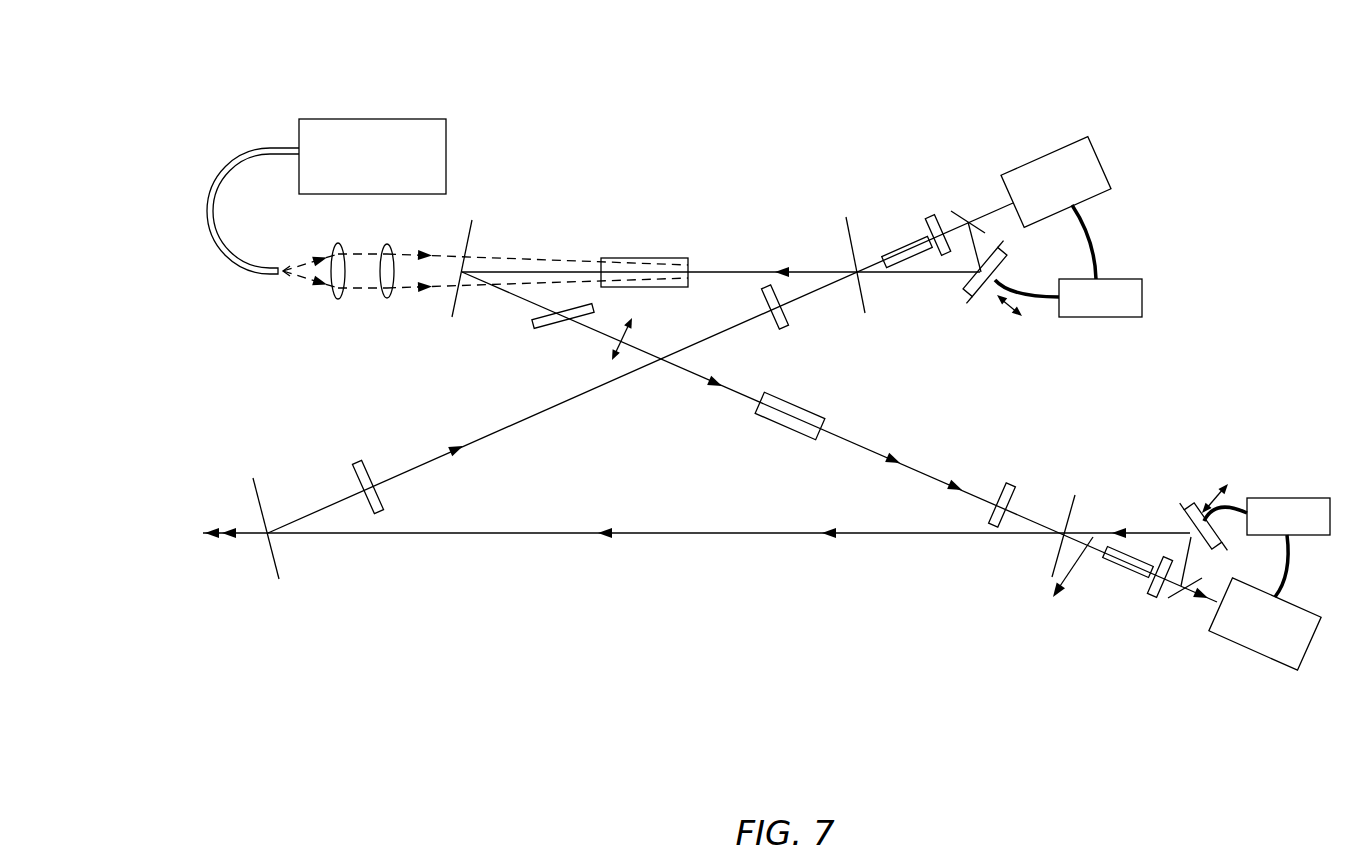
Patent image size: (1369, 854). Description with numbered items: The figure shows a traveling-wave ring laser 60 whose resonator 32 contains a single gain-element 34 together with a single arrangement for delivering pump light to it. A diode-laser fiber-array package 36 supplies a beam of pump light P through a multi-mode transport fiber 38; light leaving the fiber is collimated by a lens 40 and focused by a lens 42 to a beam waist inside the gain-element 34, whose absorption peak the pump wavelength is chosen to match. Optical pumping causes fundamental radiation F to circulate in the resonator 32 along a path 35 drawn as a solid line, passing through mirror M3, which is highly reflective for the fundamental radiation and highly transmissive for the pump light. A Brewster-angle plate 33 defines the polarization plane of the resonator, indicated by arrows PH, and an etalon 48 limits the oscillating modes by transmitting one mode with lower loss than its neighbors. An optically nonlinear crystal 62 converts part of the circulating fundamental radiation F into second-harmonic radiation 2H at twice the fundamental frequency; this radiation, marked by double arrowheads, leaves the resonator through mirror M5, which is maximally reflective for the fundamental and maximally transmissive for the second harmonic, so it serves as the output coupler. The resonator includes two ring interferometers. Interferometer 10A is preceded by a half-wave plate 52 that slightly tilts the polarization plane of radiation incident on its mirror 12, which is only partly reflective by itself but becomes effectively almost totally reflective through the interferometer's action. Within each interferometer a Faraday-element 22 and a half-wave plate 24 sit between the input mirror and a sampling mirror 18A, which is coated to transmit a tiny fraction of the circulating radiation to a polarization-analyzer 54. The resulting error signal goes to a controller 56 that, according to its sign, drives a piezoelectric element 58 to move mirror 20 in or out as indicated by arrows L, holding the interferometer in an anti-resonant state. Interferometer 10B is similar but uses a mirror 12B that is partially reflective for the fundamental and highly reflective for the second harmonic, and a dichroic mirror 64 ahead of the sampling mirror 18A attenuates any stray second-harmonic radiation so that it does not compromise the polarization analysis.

The interferometer 10A is at (894, 199).
The interferometer 10B is at (1109, 649).
The mirror 12 is at (838, 236).
The mirror 12B is at (1036, 567).
The mirror 18A is at (963, 212).
The mirror 20 is at (975, 288).
The Faraday-element 22 is at (893, 240).
The half-wave plate 24 is at (1152, 590).
The resonator 32 is at (518, 421).
The Brewster-angle plate 33 is at (533, 323).
The gain-element 34 is at (645, 258).
The path 35 is at (585, 393).
The diode-laser fiber-array package 36 is at (392, 122).
The transport fiber 38 is at (259, 151).
The lens 40 is at (333, 294).
The lens 42 is at (388, 298).
The etalon 48 is at (358, 470).
The half-wave plate 52 is at (785, 320).
The polarization-analyzer 54 is at (1120, 278).
The controller 56 is at (1118, 158).
The piezoelectric element 58 is at (985, 295).
The traveling-wave ring-laser 60 is at (947, 715).
The optically nonlinear crystal 62 is at (795, 395).
The dichroic mirror 64 is at (1093, 537).
The mirror M3 is at (471, 235).
The mirror M5 is at (277, 553).
The pump-light P is at (302, 285).
The polarization-plane arrows PH is at (632, 326).
The fundamental radiation F is at (465, 452).
The second-harmonic radiation 2H is at (617, 530).
The mirror motion arrows L is at (1112, 404).